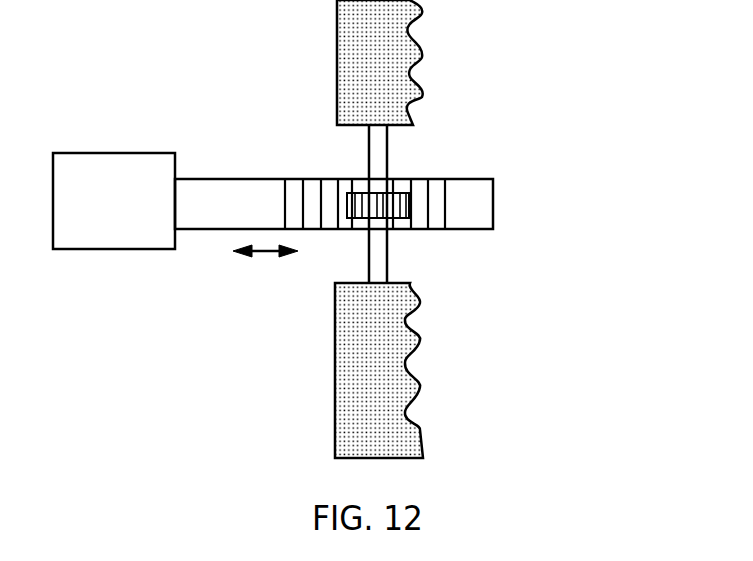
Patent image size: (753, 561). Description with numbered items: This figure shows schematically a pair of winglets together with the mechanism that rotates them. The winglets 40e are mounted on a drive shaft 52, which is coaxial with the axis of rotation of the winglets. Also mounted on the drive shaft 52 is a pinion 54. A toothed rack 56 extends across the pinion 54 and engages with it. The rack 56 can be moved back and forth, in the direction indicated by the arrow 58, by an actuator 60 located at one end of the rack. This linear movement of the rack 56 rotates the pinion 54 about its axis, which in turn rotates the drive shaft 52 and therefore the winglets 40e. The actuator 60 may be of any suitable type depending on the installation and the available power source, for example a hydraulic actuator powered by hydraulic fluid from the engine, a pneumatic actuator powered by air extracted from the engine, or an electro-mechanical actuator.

The winglets 40e is at (452, 59).
The drive shaft 52 is at (369, 260).
The pinion 54 is at (347, 193).
The toothed rack 56 is at (231, 178).
The arrow 58 is at (265, 260).
The actuator 60 is at (105, 250).